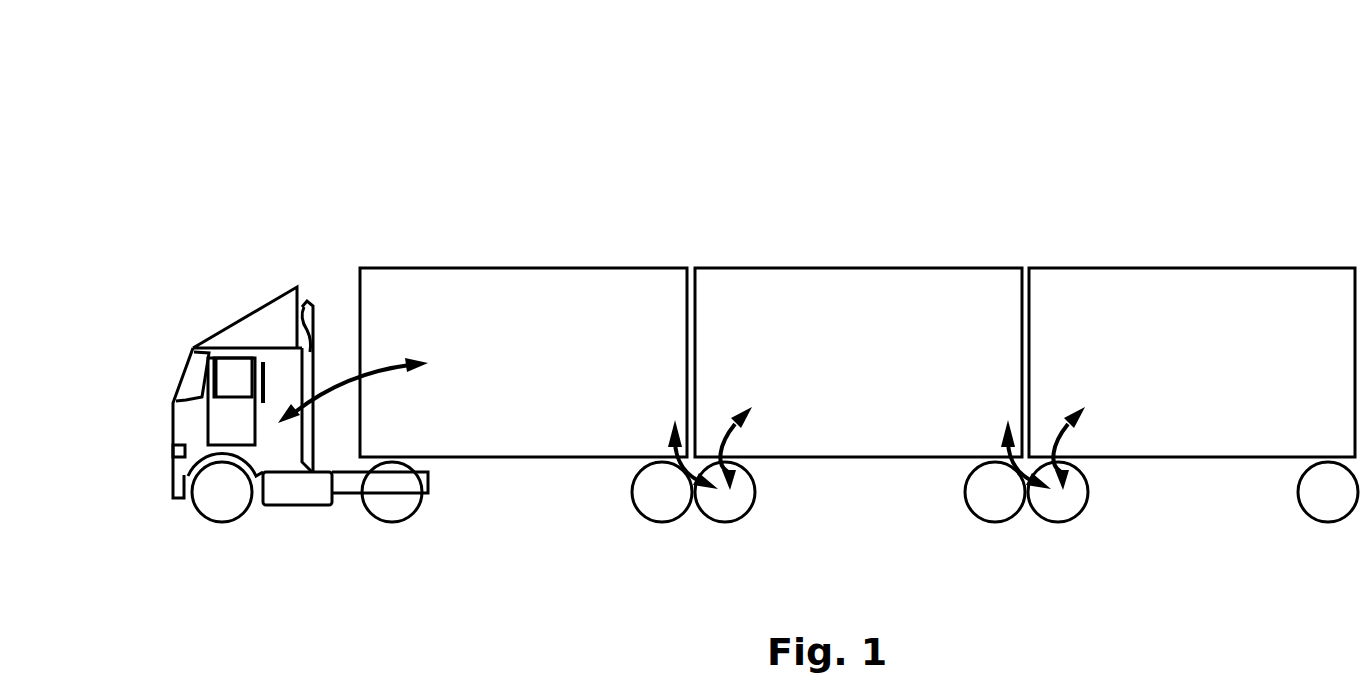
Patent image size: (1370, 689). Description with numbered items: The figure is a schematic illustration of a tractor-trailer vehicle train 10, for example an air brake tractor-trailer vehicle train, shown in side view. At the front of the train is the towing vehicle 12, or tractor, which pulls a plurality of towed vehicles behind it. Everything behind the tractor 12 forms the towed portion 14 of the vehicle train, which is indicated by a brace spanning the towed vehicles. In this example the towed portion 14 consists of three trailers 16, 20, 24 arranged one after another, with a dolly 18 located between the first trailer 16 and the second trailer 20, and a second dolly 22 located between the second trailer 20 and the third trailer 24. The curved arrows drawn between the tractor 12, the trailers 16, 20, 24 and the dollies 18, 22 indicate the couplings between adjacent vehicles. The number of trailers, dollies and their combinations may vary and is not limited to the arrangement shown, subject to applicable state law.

The tractor-trailer vehicle train 10 is at (525, 82).
The towing vehicle 12 is at (282, 365).
The towed portion 14 is at (1357, 223).
The trailer 16 is at (560, 432).
The dolly 18 is at (743, 493).
The trailer 20 is at (938, 415).
The dolly 22 is at (1078, 503).
The trailer 24 is at (1247, 410).